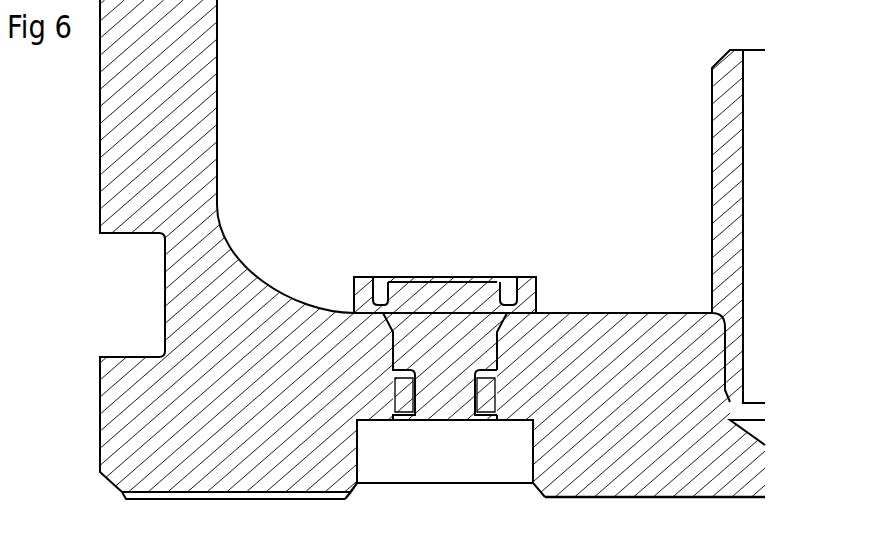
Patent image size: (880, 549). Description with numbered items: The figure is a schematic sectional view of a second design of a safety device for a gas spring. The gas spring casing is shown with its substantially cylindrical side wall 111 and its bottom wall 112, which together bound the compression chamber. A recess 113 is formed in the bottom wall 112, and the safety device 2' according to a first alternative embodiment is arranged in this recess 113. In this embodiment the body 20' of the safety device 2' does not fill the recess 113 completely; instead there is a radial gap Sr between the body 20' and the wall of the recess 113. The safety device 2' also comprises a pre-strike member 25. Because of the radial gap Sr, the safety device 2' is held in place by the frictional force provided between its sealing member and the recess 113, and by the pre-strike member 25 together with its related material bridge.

The side wall 111 is at (100, 180).
The bottom wall 112 is at (590, 428).
The recess 113 is at (393, 420).
The safety device 2' is at (281, 487).
The pre-strike member 25 is at (532, 292).
The body 20' is at (445, 425).
The radial gap Sr is at (494, 348).